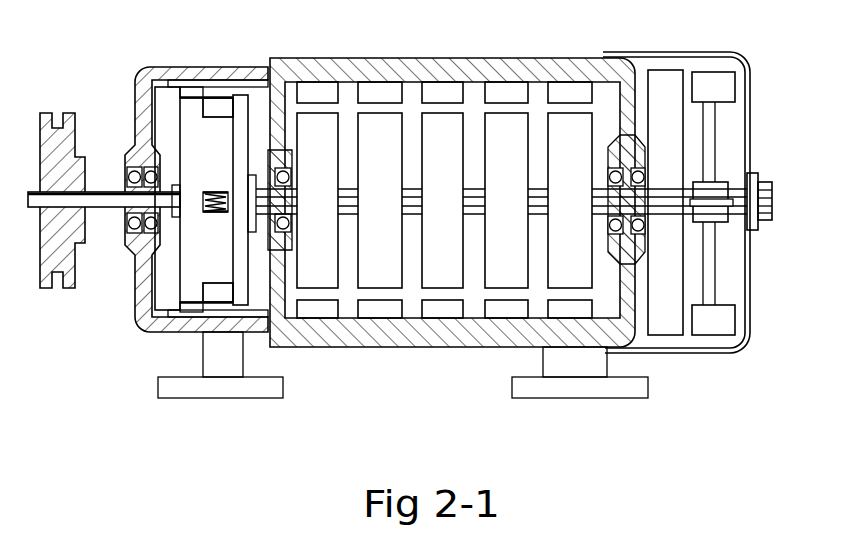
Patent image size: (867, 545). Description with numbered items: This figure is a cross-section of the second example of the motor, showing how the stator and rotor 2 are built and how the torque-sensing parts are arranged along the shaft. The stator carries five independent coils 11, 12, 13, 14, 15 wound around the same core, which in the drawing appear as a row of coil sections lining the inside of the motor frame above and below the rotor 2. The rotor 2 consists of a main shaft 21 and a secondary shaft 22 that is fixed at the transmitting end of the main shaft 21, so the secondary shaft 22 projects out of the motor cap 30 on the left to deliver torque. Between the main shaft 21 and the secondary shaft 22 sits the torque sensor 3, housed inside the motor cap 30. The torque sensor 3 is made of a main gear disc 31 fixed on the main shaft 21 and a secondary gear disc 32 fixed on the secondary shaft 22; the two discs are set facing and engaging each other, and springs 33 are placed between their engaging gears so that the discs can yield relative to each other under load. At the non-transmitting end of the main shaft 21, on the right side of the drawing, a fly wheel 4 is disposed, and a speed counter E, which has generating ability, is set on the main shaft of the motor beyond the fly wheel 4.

The rotor 2 is at (328, 167).
The torque sensor 3 is at (215, 87).
The fly wheel 4 is at (673, 88).
The independent coil 11 is at (322, 92).
The independent coil 12 is at (387, 312).
The independent coil 13 is at (448, 312).
The independent coil 14 is at (510, 312).
The independent coil 15 is at (570, 312).
The main shaft 21 is at (407, 198).
The secondary shaft 22 is at (112, 197).
The motor cap 30 is at (153, 70).
The main gear disc 31 is at (242, 110).
The secondary gear disc 32 is at (195, 275).
The springs 33 is at (213, 207).
The speed counter E is at (753, 190).